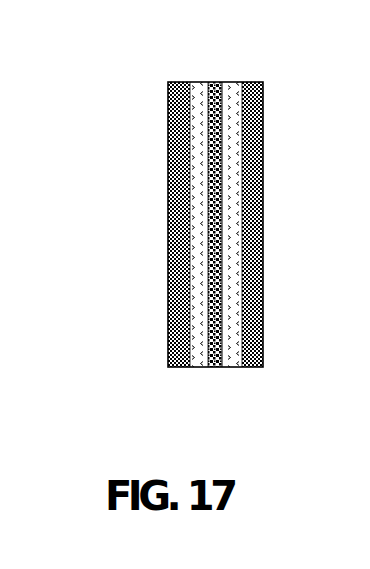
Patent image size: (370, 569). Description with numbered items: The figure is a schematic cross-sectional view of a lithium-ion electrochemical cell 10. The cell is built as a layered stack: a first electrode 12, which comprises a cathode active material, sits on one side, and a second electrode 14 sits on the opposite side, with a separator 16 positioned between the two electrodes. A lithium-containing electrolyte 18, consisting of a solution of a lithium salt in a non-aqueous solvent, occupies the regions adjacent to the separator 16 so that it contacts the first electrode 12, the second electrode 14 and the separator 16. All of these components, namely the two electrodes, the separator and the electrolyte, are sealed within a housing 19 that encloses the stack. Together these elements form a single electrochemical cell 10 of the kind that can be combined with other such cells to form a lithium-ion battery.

The lithium-ion electrochemical cell 10 is at (174, 222).
The first electrode 12 is at (168, 142).
The second electrode 14 is at (263, 128).
The separator 16 is at (222, 367).
The lithium-containing electrolyte 18 is at (195, 213).
The housing 19 is at (222, 82).